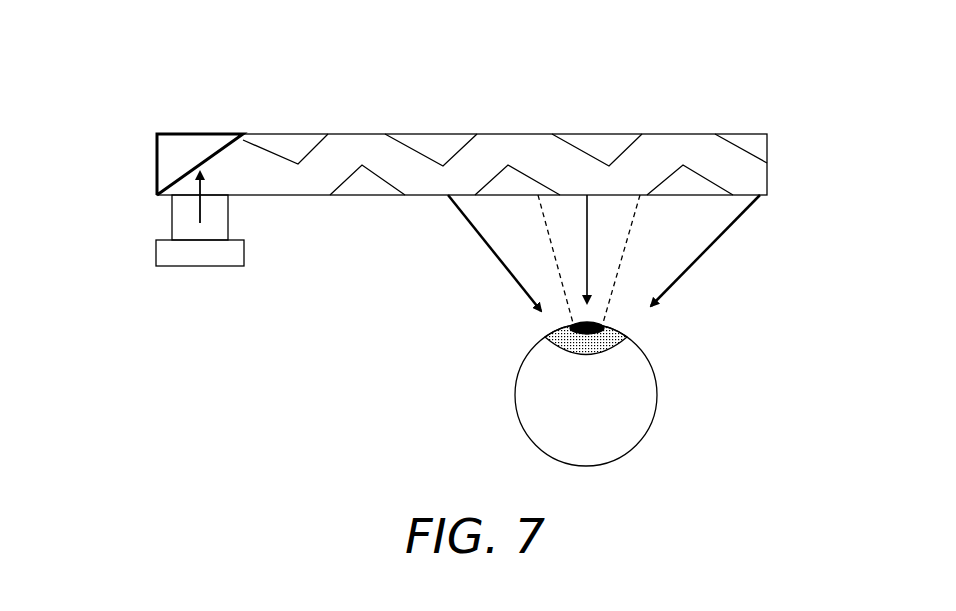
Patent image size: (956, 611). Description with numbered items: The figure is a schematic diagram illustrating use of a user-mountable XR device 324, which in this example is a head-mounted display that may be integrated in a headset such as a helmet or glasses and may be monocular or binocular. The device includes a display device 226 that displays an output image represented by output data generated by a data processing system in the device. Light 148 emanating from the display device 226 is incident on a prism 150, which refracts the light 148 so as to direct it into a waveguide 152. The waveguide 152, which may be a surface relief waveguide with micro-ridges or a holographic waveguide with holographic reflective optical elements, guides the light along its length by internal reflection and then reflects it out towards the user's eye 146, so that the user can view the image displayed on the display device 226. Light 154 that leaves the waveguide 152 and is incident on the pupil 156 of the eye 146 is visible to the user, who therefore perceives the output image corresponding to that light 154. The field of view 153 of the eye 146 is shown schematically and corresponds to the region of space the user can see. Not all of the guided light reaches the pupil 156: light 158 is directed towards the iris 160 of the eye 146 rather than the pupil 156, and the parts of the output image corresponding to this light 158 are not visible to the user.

The user-mountable XR device 324 is at (198, 74).
The prism 150 is at (180, 134).
The waveguide 152 is at (380, 161).
The light 148 is at (205, 180).
The display device 226 is at (244, 252).
The field of view 153 is at (543, 218).
The light incident on the pupil 154 is at (587, 240).
The light not incident on the pupil 158 is at (512, 278).
The eye 146 is at (647, 353).
The iris 160 is at (548, 345).
The pupil 156 is at (582, 340).